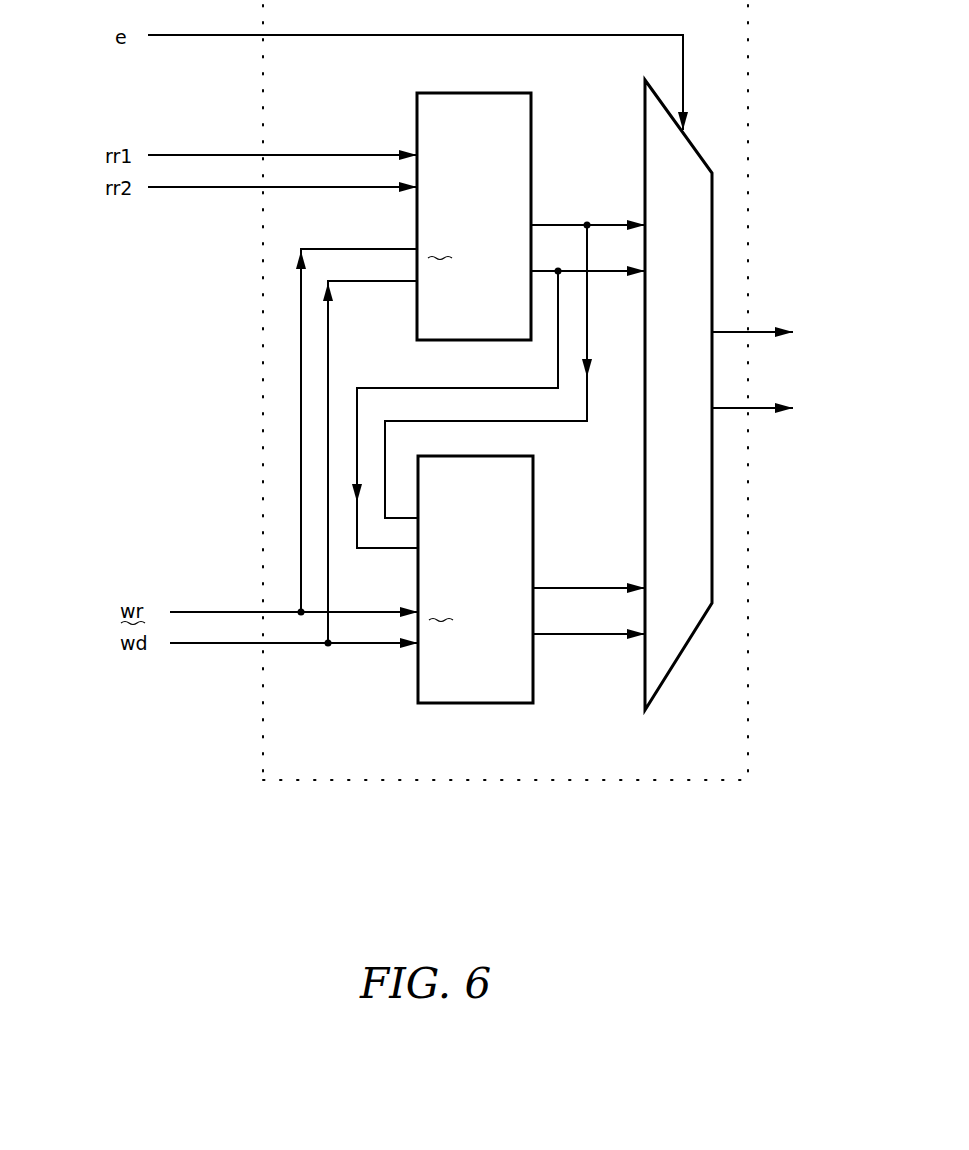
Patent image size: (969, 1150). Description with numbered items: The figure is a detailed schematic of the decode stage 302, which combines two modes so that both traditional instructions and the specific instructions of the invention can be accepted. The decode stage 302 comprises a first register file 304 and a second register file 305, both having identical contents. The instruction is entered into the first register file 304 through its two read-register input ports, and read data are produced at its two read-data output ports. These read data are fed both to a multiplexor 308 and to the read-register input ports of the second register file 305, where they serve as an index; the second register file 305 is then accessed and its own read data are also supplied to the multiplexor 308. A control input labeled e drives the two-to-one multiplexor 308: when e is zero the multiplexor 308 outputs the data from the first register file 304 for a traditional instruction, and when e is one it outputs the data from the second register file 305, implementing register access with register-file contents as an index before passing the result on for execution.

The decode stage 302 is at (614, 836).
The first register file 304 is at (488, 328).
The second register file 305 is at (490, 691).
The multiplexor 308 is at (696, 380).